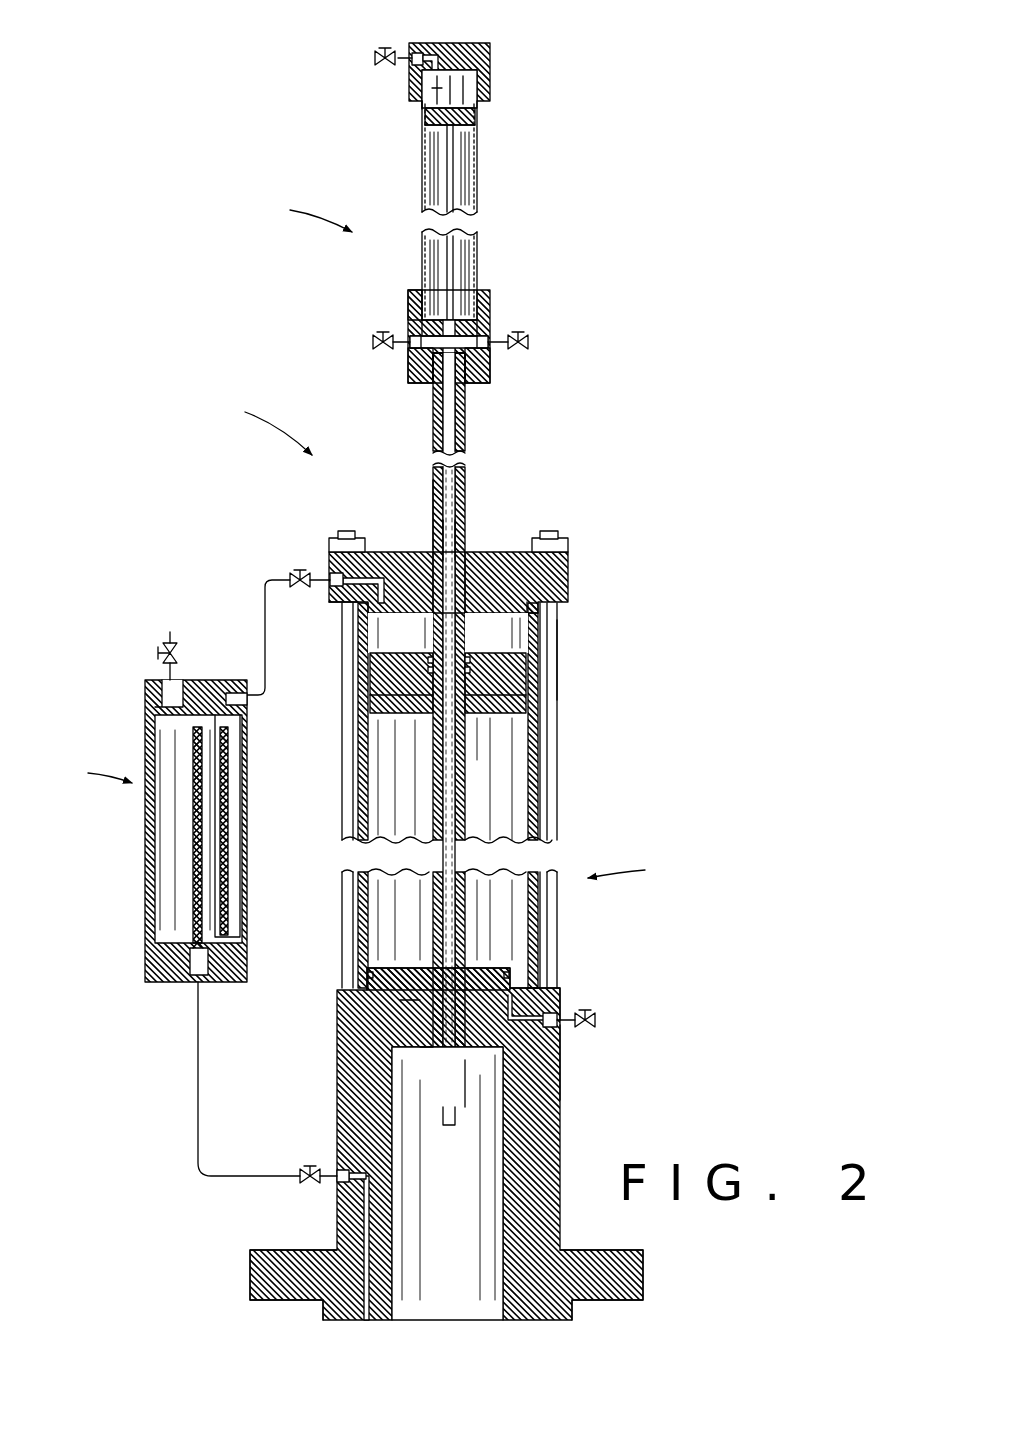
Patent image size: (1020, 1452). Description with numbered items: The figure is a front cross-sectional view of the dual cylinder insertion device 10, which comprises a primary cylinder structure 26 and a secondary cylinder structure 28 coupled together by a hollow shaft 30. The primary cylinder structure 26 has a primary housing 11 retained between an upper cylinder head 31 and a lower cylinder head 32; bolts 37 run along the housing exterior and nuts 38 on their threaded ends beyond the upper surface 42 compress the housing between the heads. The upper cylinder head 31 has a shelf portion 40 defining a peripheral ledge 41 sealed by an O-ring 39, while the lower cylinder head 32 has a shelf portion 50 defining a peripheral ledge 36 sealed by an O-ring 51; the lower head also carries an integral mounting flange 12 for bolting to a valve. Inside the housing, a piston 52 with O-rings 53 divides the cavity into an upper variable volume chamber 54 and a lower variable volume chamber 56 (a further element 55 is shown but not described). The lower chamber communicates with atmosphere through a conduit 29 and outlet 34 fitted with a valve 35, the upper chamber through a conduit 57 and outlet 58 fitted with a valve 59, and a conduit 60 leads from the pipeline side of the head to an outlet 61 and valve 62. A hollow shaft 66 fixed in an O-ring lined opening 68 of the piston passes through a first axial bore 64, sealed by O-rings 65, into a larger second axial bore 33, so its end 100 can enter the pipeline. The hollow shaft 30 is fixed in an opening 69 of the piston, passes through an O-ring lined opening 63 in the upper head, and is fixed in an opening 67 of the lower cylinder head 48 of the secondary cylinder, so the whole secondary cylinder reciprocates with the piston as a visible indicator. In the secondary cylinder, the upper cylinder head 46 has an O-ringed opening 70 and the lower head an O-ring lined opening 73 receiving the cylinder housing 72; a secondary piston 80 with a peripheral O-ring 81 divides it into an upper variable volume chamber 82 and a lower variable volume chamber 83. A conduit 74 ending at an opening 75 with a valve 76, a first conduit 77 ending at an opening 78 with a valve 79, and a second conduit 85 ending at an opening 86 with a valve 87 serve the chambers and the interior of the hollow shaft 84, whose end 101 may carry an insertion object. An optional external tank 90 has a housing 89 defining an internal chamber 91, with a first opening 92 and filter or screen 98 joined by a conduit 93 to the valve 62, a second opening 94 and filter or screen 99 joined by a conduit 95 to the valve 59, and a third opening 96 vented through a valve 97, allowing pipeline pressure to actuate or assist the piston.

The dual cylinder insertion device 10 is at (258, 427).
The primary housing 11 is at (540, 822).
The mounting flange 12 is at (645, 1275).
The primary cylinder structure 26 is at (510, 858).
The secondary cylinder structure 28 is at (300, 215).
The conduit 29 is at (560, 990).
The hollow shaft 30 is at (435, 428).
The upper cylinder head 31 is at (568, 570).
The lower cylinder head 32 is at (560, 1110).
The second axial bore 33 is at (466, 1246).
The outlet 34 is at (560, 1050).
The valve 35 is at (600, 1020).
The peripheral ledge 36 is at (545, 985).
The bolts 37 is at (560, 770).
The nuts 38 is at (552, 530).
The O-ring 39 is at (540, 610).
The shelf portion 40 is at (596, 658).
The peripheral ledge 41 is at (333, 603).
The upper surface 42 is at (420, 545).
The upper cylinder head 46 is at (488, 45).
The lower cylinder head 48 is at (470, 378).
The shelf portion 50 is at (395, 960).
The O-ring 51 is at (367, 975).
The piston 52 is at (527, 718).
The O-rings 53 is at (372, 660).
The upper variable volume chamber 54 is at (503, 650).
The piston seal 55 is at (372, 692).
The lower variable volume chamber 56 is at (477, 814).
The conduit 57 is at (380, 555).
The outlet 58 is at (330, 575).
The valve 59 is at (290, 570).
The conduit 60 is at (365, 1320).
The outlet 61 is at (340, 1185).
The valve 62 is at (300, 1183).
The O-ring lined opening 63 is at (467, 520).
The first axial bore 64 is at (430, 1047).
The O-rings 65 is at (400, 1000).
The hollow shaft 66 is at (358, 878).
The O-ring lined opening 67 is at (418, 378).
The O-ring lined opening 68 is at (493, 779).
The O-ring lined opening 69 is at (400, 633).
The O-ringed opening 70 is at (480, 92).
The cylinder housing 72 is at (421, 180).
The O-ring lined opening 73 is at (478, 298).
The conduit 74 is at (436, 56).
The opening 75 is at (413, 50).
The valve 76 is at (375, 57).
The first conduit 77 is at (410, 312).
The opening 78 is at (412, 350).
The valve 79 is at (372, 342).
The secondary piston 80 is at (423, 120).
The peripheral O-ring 81 is at (478, 116).
The upper variable volume chamber 82 is at (415, 85).
The lower variable volume chamber 83 is at (460, 150).
The hollow shaft 84 is at (478, 230).
The second conduit 85 is at (490, 318).
The opening 86 is at (490, 362).
The valve 87 is at (530, 342).
The housing 89 is at (145, 900).
The external tank 90 is at (90, 773).
The internal chamber 91 is at (165, 750).
The first opening 92 is at (192, 985).
The conduit 93 is at (197, 1145).
The second opening 94 is at (250, 698).
The conduit 95 is at (262, 610).
The third opening 96 is at (165, 690).
The valve 97 is at (170, 632).
The filter or screen 98 is at (193, 838).
The filter or screen 99 is at (232, 843).
The end 100 is at (438, 1105).
The end 101 is at (458, 1125).